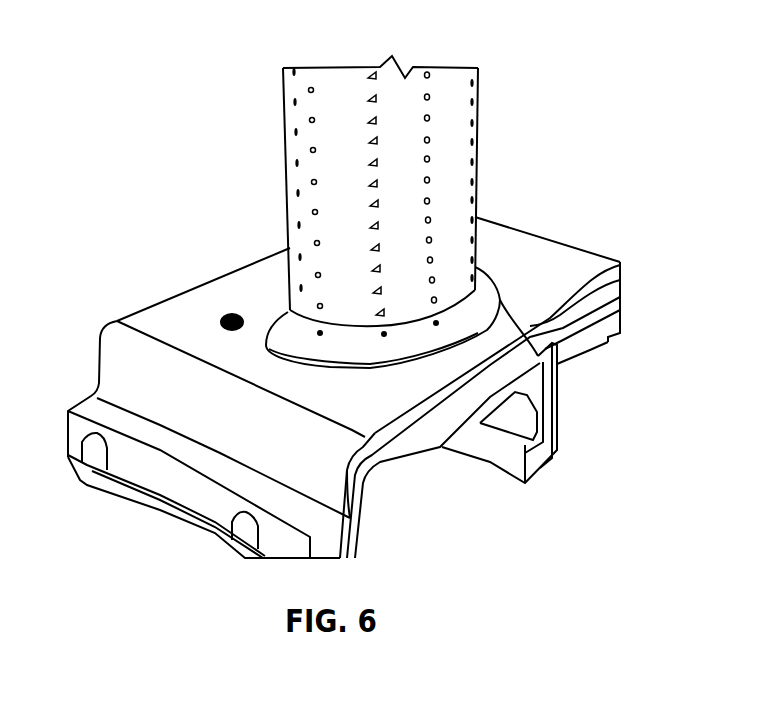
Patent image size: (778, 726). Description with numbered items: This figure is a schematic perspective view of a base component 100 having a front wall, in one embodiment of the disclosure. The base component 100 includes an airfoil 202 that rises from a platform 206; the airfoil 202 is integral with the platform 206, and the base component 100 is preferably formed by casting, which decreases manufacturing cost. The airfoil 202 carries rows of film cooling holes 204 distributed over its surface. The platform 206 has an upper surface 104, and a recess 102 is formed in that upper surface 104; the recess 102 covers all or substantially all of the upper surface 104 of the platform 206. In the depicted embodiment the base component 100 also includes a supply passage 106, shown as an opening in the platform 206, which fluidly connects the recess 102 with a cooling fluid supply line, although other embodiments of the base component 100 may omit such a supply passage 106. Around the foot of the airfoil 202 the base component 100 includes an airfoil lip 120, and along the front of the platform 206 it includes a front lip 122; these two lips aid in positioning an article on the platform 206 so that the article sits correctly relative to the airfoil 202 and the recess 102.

The base component 100 is at (578, 70).
The recess 102 is at (172, 320).
The upper surface 104 is at (275, 273).
The supply passage 106 is at (231, 312).
The airfoil lip 120 is at (453, 323).
The front lip 122 is at (302, 410).
The airfoil 202 is at (313, 152).
The film cooling holes 204 is at (427, 178).
The platform 206 is at (620, 294).